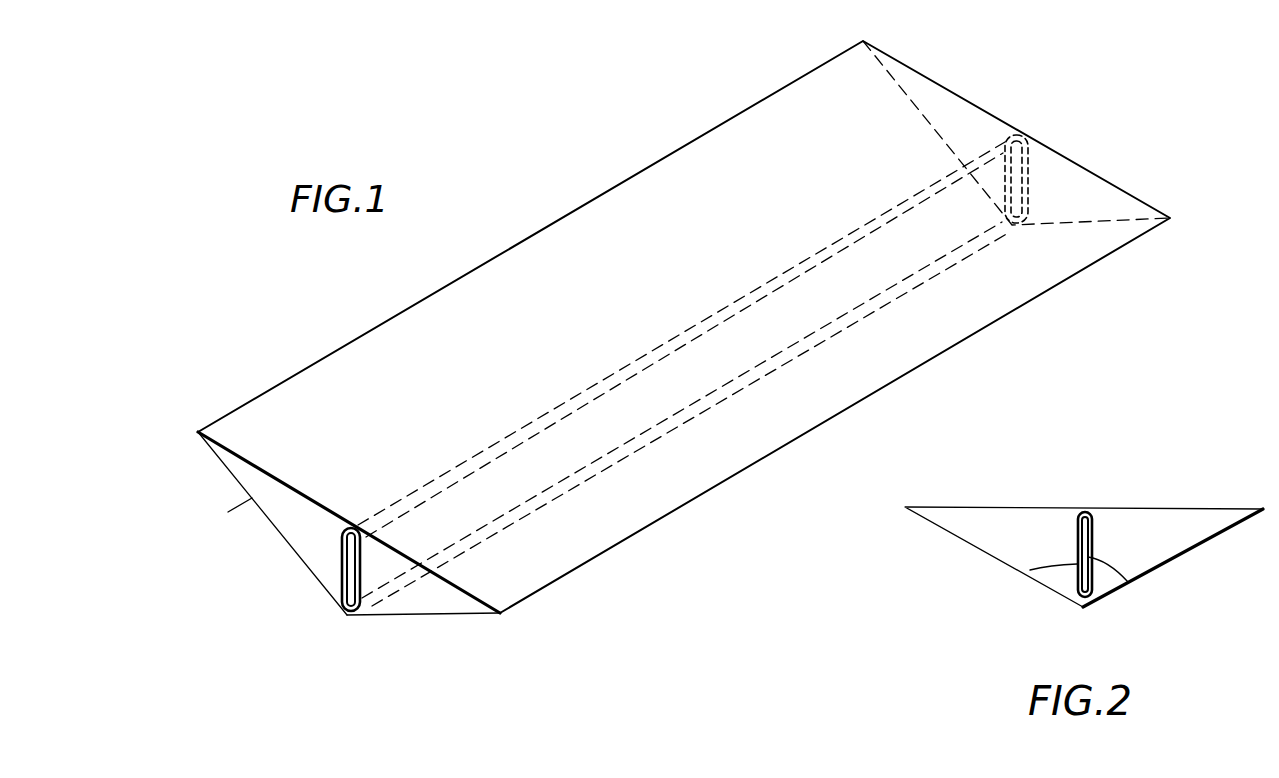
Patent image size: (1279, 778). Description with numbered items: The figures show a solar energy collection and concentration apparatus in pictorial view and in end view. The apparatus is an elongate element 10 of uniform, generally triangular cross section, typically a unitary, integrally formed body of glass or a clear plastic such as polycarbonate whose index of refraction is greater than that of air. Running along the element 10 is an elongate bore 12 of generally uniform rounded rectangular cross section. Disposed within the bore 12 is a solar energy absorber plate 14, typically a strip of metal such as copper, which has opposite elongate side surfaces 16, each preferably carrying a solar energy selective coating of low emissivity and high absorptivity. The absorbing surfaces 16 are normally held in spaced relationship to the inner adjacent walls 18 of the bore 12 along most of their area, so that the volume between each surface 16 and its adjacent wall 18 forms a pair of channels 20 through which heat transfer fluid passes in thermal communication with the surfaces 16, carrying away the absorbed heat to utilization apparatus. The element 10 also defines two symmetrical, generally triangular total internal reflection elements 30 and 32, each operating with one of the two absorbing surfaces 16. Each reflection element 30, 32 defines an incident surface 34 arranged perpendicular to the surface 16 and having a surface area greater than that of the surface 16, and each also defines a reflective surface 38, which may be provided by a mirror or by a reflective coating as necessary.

In FIG. 1, the elongate element 10 is at (290, 503).
In FIG. 1, the elongate bore 12 is at (364, 597).
In FIG. 1, the solar energy absorber plate 14 is at (345, 594).
In FIG. 1, the solar energy absorbing surfaces 16 is at (343, 570).
In FIG. 2, the solar energy absorbing surfaces 16 is at (1073, 539).
In FIG. 1, the inner adjacent walls 18 is at (342, 548).
In FIG. 2, the inner adjacent walls 18 is at (1070, 590).
In FIG. 1, the channels 20 is at (343, 530).
In FIG. 2, the channels 20 is at (1030, 570).
In FIG. 1, the total internal reflection element 30 is at (448, 602).
In FIG. 1, the total internal reflection element 32 is at (238, 468).
In FIG. 1, the incident surface 34 is at (478, 280).
In FIG. 1, the reflective surface 38 is at (252, 498).